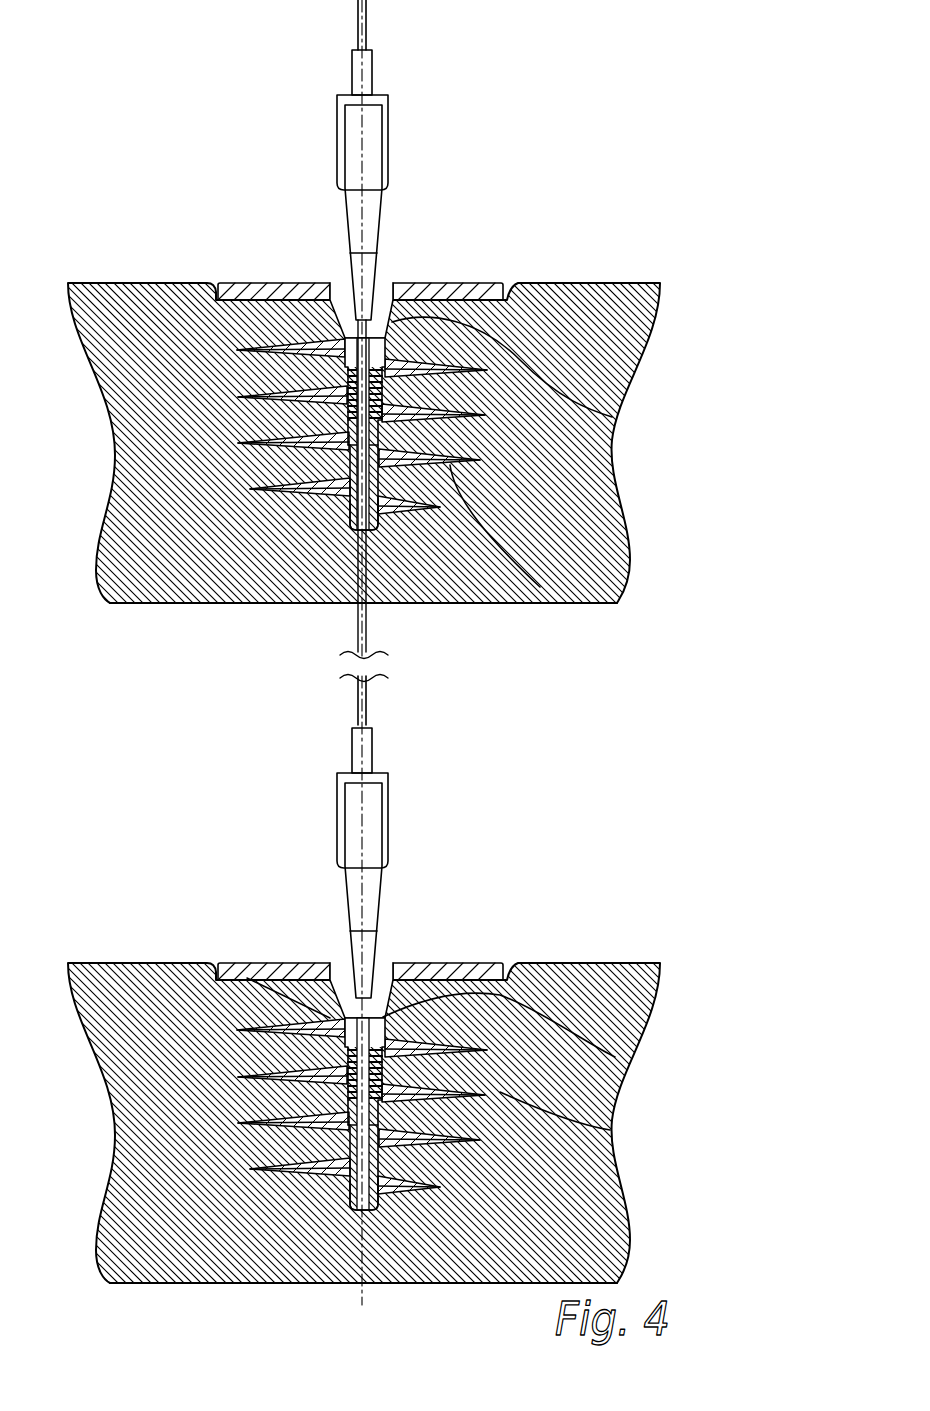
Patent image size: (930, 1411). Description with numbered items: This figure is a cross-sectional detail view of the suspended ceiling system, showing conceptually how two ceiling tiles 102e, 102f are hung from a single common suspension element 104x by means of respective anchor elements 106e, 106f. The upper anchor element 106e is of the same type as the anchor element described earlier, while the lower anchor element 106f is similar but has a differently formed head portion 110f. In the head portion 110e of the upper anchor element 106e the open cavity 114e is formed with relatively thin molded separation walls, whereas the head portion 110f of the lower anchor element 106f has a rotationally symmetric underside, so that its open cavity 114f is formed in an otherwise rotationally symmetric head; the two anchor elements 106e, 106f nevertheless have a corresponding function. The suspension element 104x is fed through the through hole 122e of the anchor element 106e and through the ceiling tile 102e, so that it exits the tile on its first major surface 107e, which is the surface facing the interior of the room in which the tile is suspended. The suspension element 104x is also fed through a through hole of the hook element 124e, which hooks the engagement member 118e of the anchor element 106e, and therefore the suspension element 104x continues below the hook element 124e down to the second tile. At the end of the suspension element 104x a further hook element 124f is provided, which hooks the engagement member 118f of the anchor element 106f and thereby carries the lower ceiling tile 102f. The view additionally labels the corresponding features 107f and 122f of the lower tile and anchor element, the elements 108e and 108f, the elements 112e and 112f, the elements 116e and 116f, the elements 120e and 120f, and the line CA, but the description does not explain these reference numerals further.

The suspension element 104x is at (367, 33).
The hook element 124e is at (388, 140).
The hook element 124f is at (388, 837).
The head portion 110e is at (355, 396).
The head portion 110f is at (355, 1076).
The first component 108e is at (117, 283).
The first component 108f is at (117, 963).
The engagement member 118e is at (382, 287).
The engagement member 118f is at (381, 972).
The anchor element 106e is at (456, 422).
The anchor element 106f is at (467, 984).
The plate 116e is at (497, 283).
The plate 116f is at (498, 963).
The helical thread 112e is at (218, 423).
The helical thread 112f is at (218, 1103).
The open cavity 114e is at (612, 417).
The open cavity 114f is at (615, 1057).
The through hole 122e is at (345, 522).
The fastener tip 122f is at (352, 1200).
The first major surface 107e is at (168, 605).
The bottom surface 107f is at (168, 1285).
The ceiling tile 102e is at (488, 607).
The ceiling tile 102f is at (490, 1284).
The bore wall 120e is at (540, 587).
The bore wall 120f is at (610, 1130).
The central axis CA is at (359, 1004).